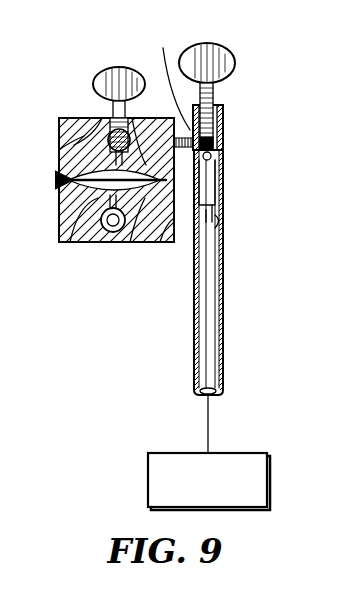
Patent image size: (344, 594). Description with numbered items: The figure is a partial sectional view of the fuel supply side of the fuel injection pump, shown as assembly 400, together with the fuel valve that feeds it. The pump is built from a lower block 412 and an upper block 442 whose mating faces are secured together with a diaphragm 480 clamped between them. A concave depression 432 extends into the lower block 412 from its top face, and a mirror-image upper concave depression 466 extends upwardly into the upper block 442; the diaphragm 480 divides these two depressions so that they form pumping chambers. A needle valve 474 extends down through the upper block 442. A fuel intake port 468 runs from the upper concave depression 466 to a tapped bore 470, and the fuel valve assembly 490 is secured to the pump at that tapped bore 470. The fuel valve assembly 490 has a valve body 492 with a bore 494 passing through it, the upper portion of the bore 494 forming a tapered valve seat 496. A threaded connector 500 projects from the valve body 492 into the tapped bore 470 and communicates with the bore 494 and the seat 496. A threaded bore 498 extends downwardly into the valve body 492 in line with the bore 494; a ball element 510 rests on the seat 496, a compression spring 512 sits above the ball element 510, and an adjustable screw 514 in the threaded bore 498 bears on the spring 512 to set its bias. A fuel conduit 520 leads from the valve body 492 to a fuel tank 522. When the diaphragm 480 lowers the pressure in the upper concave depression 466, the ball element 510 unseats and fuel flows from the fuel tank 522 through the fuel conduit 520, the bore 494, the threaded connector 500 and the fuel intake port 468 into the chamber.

The valve assembly 400 is at (78, 104).
The lower block 412 is at (68, 243).
The concave depression 432 is at (62, 224).
The upper block 442 is at (70, 140).
The upper concave depression 466 is at (80, 172).
The fuel intake port 468 is at (170, 130).
The tapped bore 470 is at (164, 79).
The needle valve 474 is at (122, 66).
The diaphragm 480 is at (122, 243).
The fuel valve assembly 490 is at (224, 108).
The valve body 492 is at (218, 200).
The bore 494 is at (220, 222).
The tapered valve seat 496 is at (220, 176).
The threaded bore 498 is at (186, 142).
The threaded connector 500 is at (166, 242).
The ball element 510 is at (212, 157).
The compression spring 512 is at (216, 147).
The adjustable screw 514 is at (235, 66).
The fuel conduit 520 is at (224, 340).
The fuel tank 522 is at (262, 453).